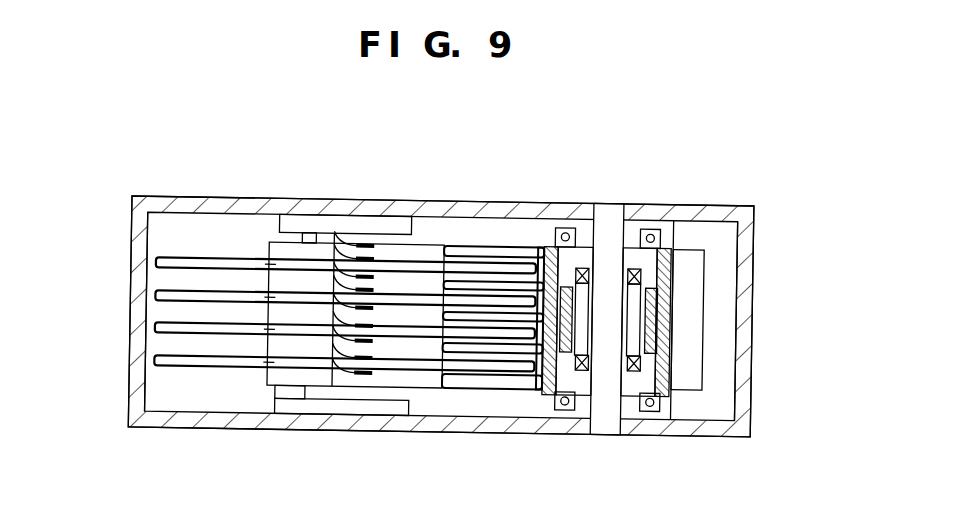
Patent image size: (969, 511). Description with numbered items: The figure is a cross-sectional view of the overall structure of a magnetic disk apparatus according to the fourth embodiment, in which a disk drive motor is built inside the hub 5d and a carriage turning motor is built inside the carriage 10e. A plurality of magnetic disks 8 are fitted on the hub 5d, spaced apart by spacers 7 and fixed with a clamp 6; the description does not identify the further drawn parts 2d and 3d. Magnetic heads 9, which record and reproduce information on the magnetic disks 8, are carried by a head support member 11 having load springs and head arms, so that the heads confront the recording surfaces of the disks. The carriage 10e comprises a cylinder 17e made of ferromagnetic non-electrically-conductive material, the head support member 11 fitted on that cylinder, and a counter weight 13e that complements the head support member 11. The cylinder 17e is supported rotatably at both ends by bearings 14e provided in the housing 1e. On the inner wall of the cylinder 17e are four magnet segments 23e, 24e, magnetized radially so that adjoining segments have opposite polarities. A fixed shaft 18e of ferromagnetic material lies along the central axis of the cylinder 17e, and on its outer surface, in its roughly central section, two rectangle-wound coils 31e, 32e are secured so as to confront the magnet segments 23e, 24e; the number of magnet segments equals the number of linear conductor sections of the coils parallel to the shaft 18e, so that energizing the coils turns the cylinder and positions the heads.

The clamp 6 is at (196, 196).
The spacers 7 is at (236, 268).
The magnetic disks 8 is at (240, 334).
The magnetic heads 9 is at (336, 240).
The head support member 11 is at (484, 344).
The housing 1e is at (137, 387).
The support blocks 2d is at (309, 220).
The insulating support block 3d is at (270, 240).
The hub 5d is at (270, 382).
The carriage 10e is at (719, 396).
The counter weight 13e is at (689, 253).
The bearings 14e is at (651, 221).
The cylinder 17e is at (549, 238).
The fixed shaft 18e is at (607, 222).
The magnet segment 23e is at (657, 300).
The magnet segment 24e is at (566, 396).
The rectangle-wound coil 31e is at (643, 357).
The rectangle-wound coil 32e is at (585, 365).